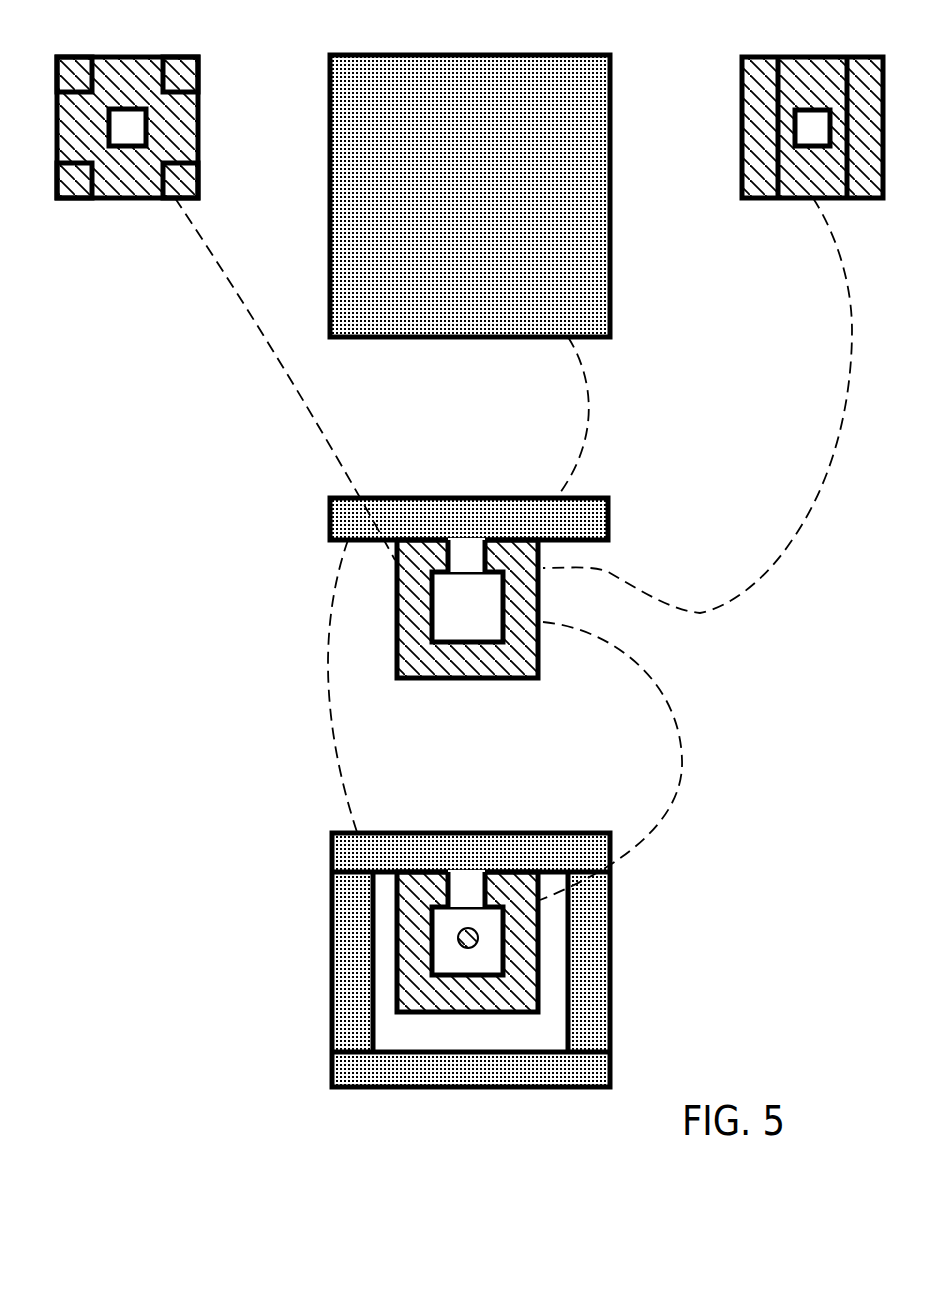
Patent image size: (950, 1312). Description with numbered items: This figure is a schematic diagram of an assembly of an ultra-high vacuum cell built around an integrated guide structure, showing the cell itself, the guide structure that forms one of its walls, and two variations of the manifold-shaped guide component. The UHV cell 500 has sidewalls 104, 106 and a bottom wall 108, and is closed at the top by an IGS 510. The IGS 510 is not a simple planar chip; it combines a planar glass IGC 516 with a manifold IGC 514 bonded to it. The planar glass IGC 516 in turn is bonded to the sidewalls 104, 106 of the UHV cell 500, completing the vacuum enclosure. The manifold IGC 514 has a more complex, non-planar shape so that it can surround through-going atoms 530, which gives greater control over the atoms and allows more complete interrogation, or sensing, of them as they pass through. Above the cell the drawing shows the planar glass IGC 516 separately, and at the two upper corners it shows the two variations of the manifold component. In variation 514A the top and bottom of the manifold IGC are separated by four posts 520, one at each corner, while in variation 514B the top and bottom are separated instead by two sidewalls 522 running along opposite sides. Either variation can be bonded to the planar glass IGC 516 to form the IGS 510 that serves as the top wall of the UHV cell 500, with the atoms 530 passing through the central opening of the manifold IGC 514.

The UHV cell 500 is at (510, 944).
The IGS 510 is at (469, 569).
The manifold IGC 514 is at (486, 666).
The variation of manifold IGC with posts 514A is at (124, 153).
The variation of manifold IGC with sidewalls 514B is at (764, 154).
The planar glass IGC 516 is at (413, 106).
The posts 520 is at (77, 199).
The sidewalls 522 is at (762, 199).
The atoms 530 is at (472, 940).
The sidewall 104 is at (332, 963).
The sidewall 106 is at (610, 992).
The bottom wall 108 is at (491, 1080).